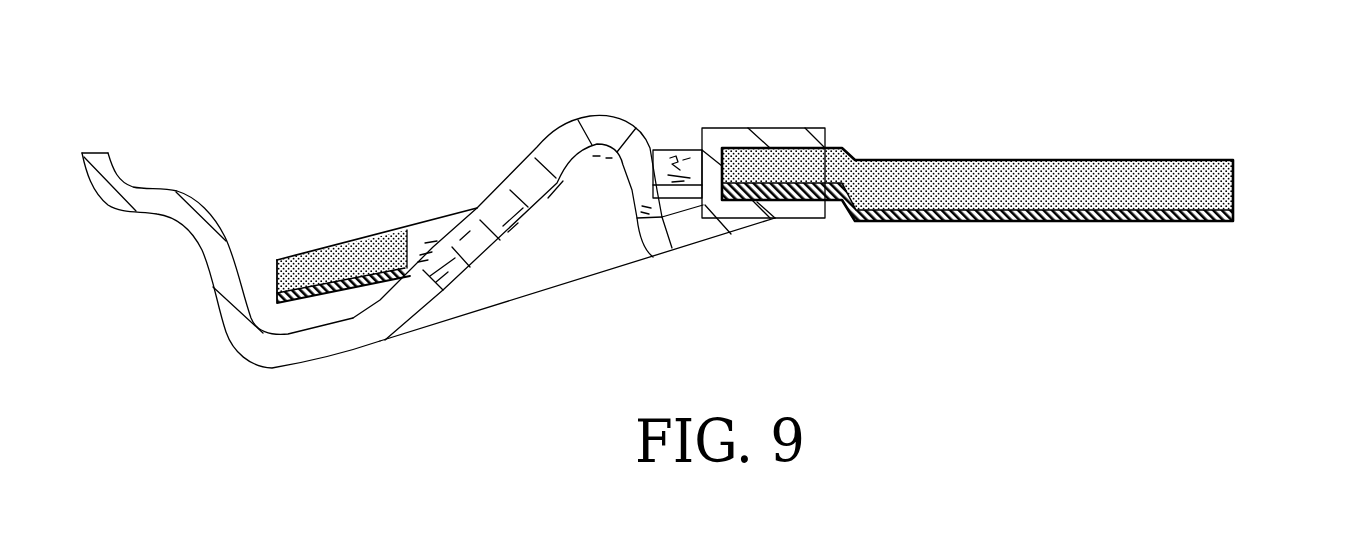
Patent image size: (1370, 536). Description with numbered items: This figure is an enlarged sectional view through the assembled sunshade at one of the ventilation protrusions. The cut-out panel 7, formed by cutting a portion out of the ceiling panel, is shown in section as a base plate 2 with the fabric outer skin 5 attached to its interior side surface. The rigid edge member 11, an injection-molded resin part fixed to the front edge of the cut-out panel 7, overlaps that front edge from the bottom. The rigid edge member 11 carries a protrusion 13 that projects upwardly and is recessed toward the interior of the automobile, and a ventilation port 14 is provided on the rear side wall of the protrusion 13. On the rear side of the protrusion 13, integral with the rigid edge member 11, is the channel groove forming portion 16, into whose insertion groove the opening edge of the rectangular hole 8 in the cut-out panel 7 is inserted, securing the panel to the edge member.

The base plate 2 is at (1032, 199).
The outer skin 5 is at (1178, 223).
The cut-out panel 7 is at (1002, 160).
The rectangular hole 8 is at (427, 237).
The rigid edge member 11 is at (196, 281).
The protrusion 13 is at (517, 165).
The ventilation port 14 is at (662, 163).
The channel groove forming portion 16 is at (776, 128).